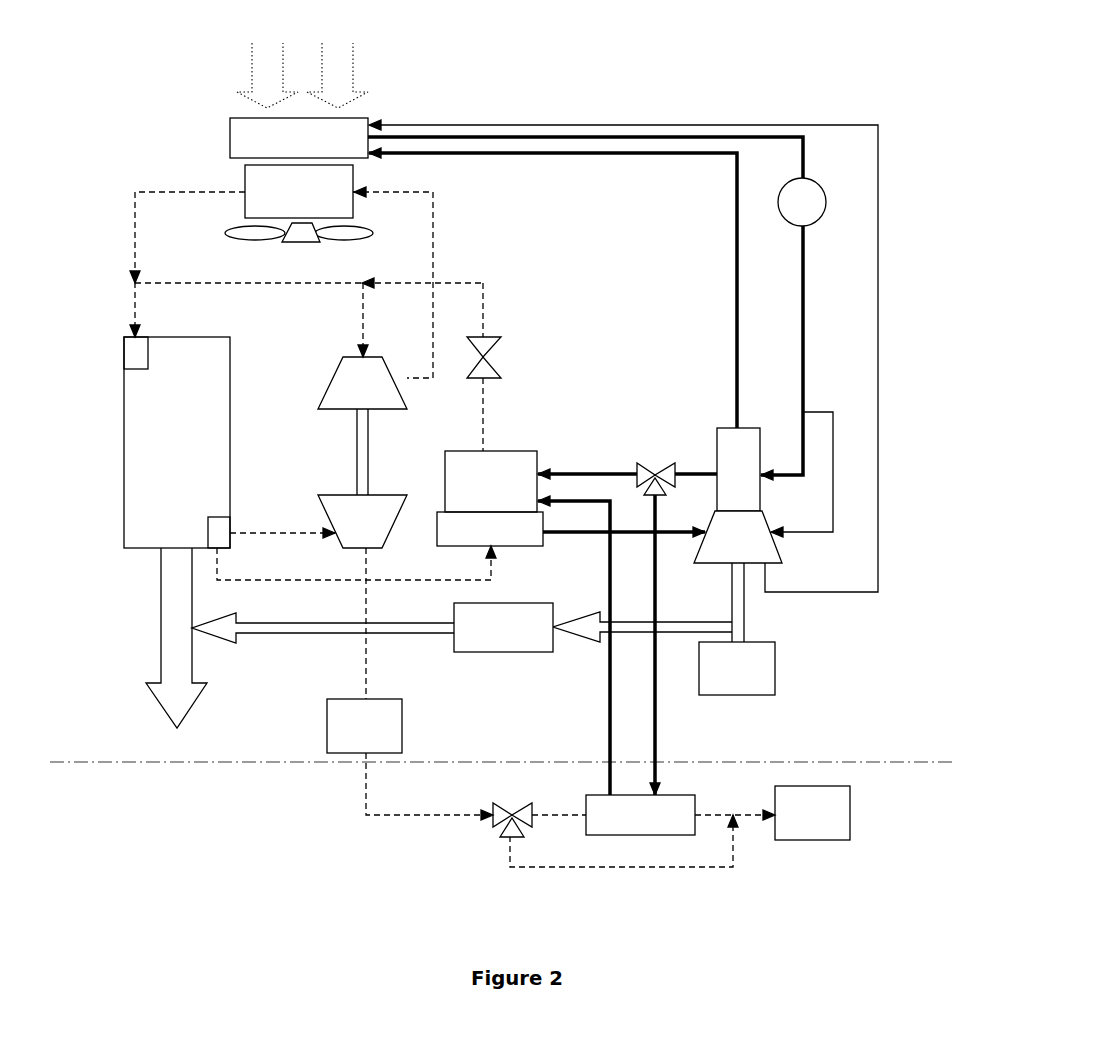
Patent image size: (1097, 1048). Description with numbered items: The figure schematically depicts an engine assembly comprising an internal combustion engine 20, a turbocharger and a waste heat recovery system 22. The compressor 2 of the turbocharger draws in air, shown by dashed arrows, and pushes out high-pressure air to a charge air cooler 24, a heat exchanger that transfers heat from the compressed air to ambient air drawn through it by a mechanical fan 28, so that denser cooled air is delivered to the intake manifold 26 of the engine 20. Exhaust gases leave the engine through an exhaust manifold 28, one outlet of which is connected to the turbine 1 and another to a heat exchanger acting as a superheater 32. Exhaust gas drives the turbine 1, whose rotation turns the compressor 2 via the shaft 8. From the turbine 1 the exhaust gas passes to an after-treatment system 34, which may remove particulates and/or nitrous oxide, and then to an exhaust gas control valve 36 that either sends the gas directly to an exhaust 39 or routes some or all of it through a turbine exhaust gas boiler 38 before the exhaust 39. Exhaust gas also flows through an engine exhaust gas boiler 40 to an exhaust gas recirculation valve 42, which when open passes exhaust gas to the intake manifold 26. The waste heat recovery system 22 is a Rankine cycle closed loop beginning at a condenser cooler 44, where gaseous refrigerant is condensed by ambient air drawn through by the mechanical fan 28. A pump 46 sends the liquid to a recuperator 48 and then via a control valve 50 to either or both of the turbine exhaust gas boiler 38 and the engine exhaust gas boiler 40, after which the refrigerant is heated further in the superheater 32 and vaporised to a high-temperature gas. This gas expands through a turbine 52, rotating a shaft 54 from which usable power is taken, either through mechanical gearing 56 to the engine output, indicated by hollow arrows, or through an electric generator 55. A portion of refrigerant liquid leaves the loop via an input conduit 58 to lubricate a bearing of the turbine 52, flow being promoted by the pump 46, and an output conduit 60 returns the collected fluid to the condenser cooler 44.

The turbine 1 is at (362, 521).
The compressor 2 is at (362, 383).
The shaft 8 is at (358, 447).
The internal combustion engine 20 is at (177, 442).
The waste heat recovery system 22 is at (856, 78).
The charge air cooler 24 is at (299, 191).
The intake manifold 26 is at (132, 353).
The mechanical fan / exhaust manifold 28 is at (250, 233).
The superheater 32 is at (490, 529).
The after-treatment system 34 is at (364, 726).
The exhaust gas control valve 36 is at (513, 810).
The turbine exhaust gas boiler 38 is at (640, 815).
The exhaust 39 is at (812, 813).
The engine exhaust gas boiler 40 is at (491, 481).
The exhaust gas recirculation valve 42 is at (488, 345).
The condenser cooler 44 is at (299, 138).
The pump 46 is at (802, 202).
The recuperator 48 is at (738, 469).
The control valve 50 is at (655, 463).
The turbine 52 is at (738, 537).
The shaft 54 is at (738, 590).
The electric generator 55 is at (737, 668).
The mechanical gearing 56 is at (503, 627).
The input conduit 58 is at (833, 420).
The output conduit 60 is at (822, 592).